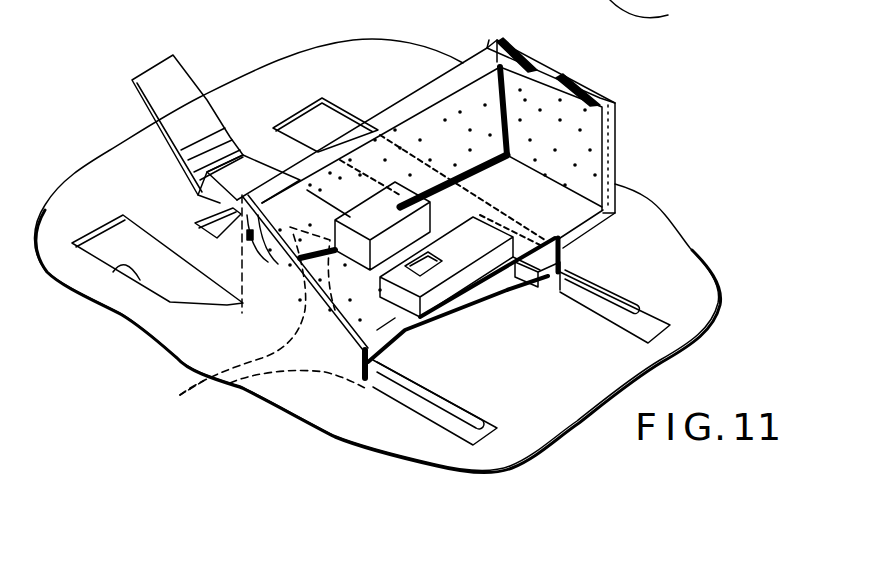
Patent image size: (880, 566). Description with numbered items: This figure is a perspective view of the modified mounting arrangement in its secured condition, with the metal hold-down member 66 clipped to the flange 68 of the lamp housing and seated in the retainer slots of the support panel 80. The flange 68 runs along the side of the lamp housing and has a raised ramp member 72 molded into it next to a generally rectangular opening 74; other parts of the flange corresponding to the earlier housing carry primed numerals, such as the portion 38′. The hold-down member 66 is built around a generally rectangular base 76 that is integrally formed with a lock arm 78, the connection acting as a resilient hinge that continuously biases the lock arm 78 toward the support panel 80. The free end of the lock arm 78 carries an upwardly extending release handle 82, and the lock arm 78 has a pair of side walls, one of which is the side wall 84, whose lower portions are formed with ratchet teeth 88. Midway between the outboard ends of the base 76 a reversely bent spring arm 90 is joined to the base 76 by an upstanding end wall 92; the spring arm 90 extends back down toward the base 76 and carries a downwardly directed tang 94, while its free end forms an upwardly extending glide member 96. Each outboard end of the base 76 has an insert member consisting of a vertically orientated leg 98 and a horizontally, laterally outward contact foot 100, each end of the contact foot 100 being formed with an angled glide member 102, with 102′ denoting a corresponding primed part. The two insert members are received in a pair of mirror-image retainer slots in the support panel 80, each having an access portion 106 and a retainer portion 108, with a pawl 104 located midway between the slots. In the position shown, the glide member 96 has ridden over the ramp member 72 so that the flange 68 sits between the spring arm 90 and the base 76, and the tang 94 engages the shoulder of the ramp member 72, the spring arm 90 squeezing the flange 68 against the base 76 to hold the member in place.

The flexible circuit 38′ is at (188, 383).
The hold-down member 66 is at (257, 155).
The flange 68 is at (432, 72).
The ramp member 72 is at (522, 270).
The rectangular opening 74 is at (395, 200).
The base 76 is at (520, 285).
The lock arm 78 is at (140, 62).
The support panel 80 is at (667, 270).
The release handle 82 is at (173, 93).
The side wall 84 is at (196, 188).
The ratchet teeth 88 is at (261, 254).
The spring arm 90 is at (469, 305).
The end wall 92 is at (497, 275).
The tang 94 is at (425, 252).
The glide member 96 is at (378, 326).
The leg 98 is at (433, 388).
The contact foot 100 is at (241, 393).
The glide member 102 is at (713, 0).
The sheet edge 102′ is at (186, 396).
The pawl 104 is at (195, 218).
The access portion 106 is at (117, 268).
The retainer portion 108 is at (463, 410).